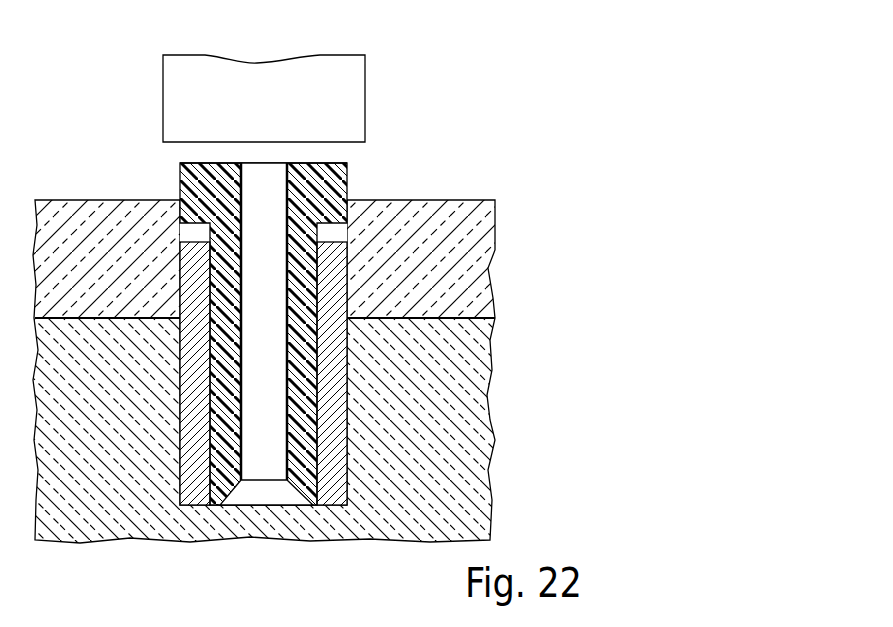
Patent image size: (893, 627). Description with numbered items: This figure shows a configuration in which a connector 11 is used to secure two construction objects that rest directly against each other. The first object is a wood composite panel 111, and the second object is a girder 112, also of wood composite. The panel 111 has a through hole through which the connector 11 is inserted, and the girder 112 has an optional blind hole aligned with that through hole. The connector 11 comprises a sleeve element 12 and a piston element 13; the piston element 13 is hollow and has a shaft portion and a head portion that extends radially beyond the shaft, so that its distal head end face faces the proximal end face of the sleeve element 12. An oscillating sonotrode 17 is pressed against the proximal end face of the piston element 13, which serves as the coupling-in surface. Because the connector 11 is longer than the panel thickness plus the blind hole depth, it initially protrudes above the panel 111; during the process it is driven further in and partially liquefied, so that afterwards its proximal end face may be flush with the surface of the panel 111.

The connector 11 is at (306, 307).
The sleeve element 12 is at (330, 412).
The piston element 13 is at (333, 177).
The sonotrode 17 is at (337, 80).
The wood composite panel 111 is at (450, 247).
The girder 112 is at (458, 380).